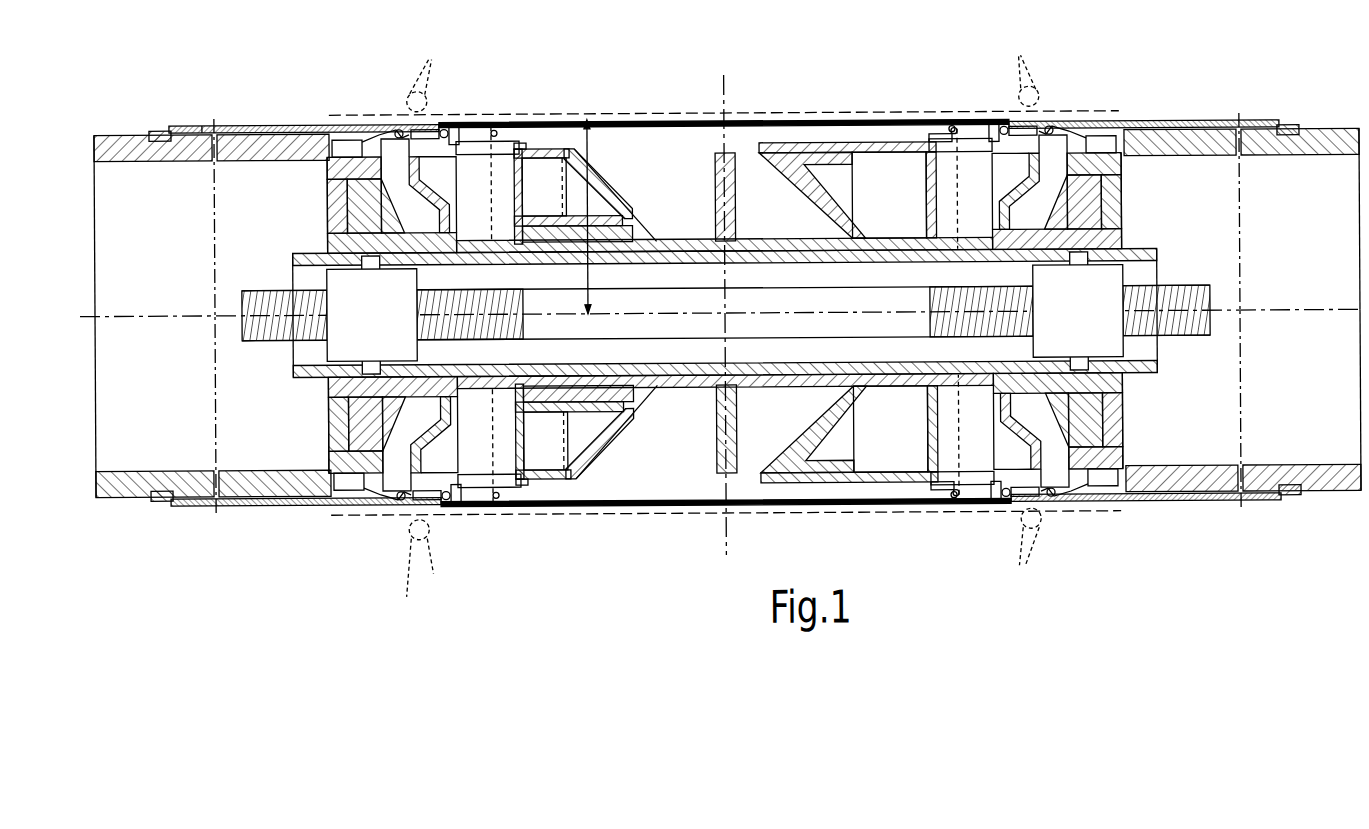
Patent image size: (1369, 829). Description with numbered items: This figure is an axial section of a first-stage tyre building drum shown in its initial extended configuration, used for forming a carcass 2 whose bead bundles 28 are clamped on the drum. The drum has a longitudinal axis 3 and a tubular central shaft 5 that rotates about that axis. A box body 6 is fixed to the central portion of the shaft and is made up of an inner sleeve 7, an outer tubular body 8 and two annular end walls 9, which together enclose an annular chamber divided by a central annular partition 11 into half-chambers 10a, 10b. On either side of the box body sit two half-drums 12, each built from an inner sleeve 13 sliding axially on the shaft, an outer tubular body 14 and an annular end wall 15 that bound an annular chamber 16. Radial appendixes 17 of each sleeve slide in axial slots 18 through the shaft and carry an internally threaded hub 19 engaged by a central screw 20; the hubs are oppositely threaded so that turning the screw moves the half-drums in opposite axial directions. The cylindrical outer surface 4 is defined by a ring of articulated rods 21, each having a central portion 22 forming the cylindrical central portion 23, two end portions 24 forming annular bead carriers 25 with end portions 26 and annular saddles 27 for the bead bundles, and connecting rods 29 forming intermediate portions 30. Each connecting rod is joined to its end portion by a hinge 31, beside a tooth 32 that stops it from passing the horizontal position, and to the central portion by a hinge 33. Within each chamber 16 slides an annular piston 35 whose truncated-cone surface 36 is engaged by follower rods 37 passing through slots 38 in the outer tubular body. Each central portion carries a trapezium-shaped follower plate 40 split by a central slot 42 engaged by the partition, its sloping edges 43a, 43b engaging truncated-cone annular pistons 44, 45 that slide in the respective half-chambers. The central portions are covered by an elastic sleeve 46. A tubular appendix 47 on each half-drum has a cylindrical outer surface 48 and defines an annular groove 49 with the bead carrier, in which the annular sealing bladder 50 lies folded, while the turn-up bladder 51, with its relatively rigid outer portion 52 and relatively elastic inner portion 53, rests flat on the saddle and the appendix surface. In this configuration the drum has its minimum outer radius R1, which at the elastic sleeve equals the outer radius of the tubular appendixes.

The carcass 2 is at (607, 108).
The longitudinal axis 3 is at (1262, 308).
The outer surface 4 is at (744, 112).
The tubular central shaft 5 is at (892, 38).
The box body 6 is at (938, 126).
The inner sleeve 7 is at (904, 121).
The outer tubular body 8 is at (545, 128).
The annular end walls 9 is at (514, 183).
The half-chamber 10a is at (570, 128).
The half-chamber 10b is at (868, 122).
The central annular partition 11 is at (712, 122).
The half-drums 12 is at (324, 240).
The inner sleeve 13 is at (1110, 376).
The outer tubular body 14 is at (1124, 456).
The annular end wall 15 is at (994, 414).
The annular chamber 16 is at (1069, 497).
The radial appendixes 17 is at (372, 268).
The axial slot 18 is at (1056, 270).
The internally threaded hub 19 is at (1118, 348).
The central screw 20 is at (262, 300).
The articulated longitudinal rods 21 is at (511, 503).
The central portion 22 is at (517, 128).
The cylindrical central portion 23 is at (688, 388).
The end portions 24 is at (405, 127).
The annular bead carrier 25 is at (1042, 128).
The end portion 26 is at (1026, 551).
The annular saddle 27 is at (1055, 500).
The bead bundle 28 is at (1040, 88).
The connecting rod 29 is at (494, 128).
The intermediate portion 30 is at (967, 121).
The hinge 31 is at (444, 127).
The gland sleeve 32 is at (455, 121).
The hinge 33 is at (495, 139).
The annular piston 35 is at (1121, 200).
The surface 36 is at (352, 497).
The follower rods 37 is at (367, 497).
The slot 38 is at (370, 428).
The follower plate 40 is at (650, 120).
The central slot 42 is at (733, 212).
The sloping edge 43a is at (612, 192).
The sloping edge 43b is at (805, 200).
The truncated-cone-shaped annular piston 44 is at (630, 230).
The truncated-cone-shaped annular piston 45 is at (835, 121).
The elastic sleeve 46 is at (779, 118).
The tubular appendix 47 is at (122, 494).
The cylindrical outer surface 48 is at (135, 126).
The annular groove 49 is at (349, 142).
The annular sealing bladder 50 is at (356, 155).
The annular turn-up bladder 51 is at (204, 120).
The outer portion 52 is at (185, 127).
The inner portion 53 is at (226, 122).
The minimum outer radius R1 is at (590, 200).